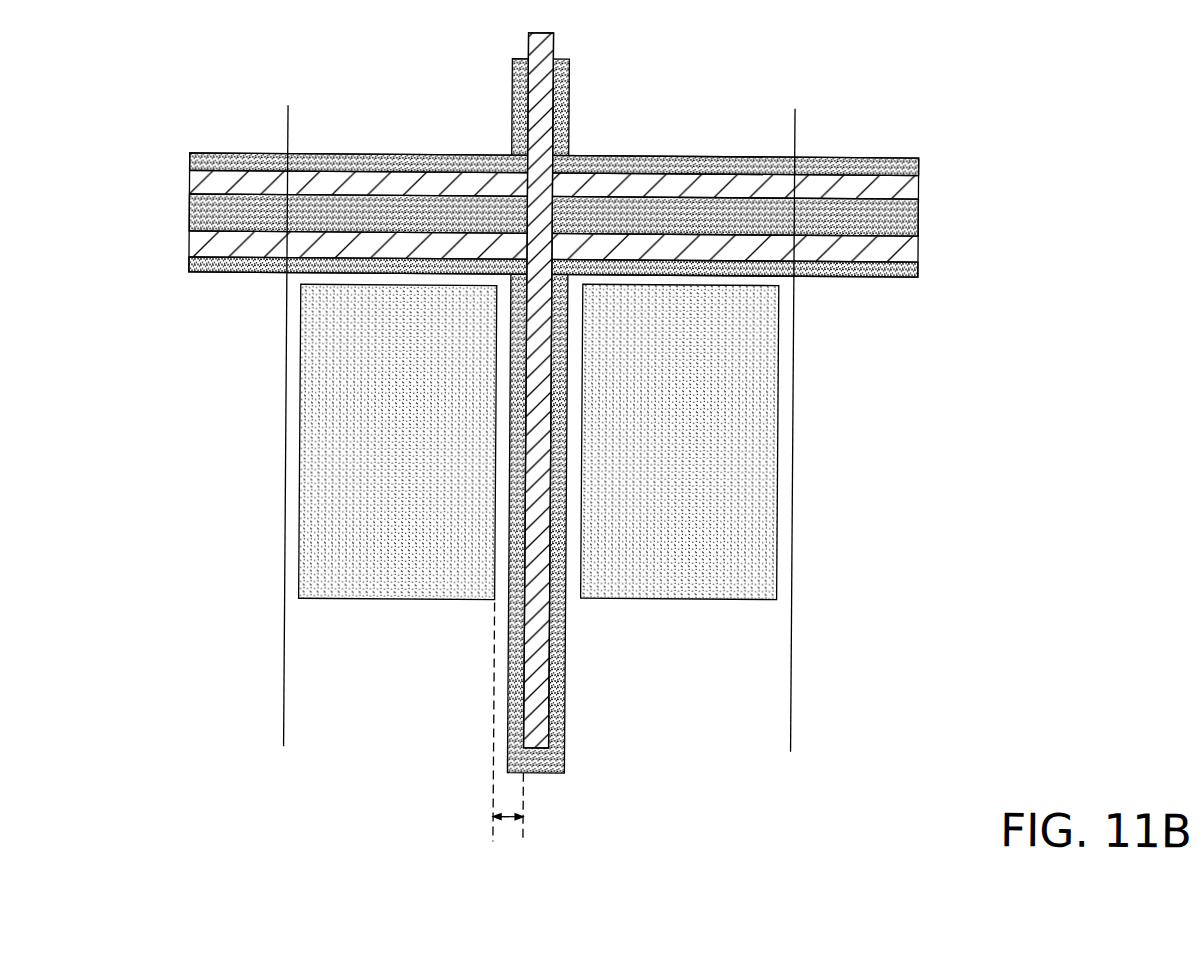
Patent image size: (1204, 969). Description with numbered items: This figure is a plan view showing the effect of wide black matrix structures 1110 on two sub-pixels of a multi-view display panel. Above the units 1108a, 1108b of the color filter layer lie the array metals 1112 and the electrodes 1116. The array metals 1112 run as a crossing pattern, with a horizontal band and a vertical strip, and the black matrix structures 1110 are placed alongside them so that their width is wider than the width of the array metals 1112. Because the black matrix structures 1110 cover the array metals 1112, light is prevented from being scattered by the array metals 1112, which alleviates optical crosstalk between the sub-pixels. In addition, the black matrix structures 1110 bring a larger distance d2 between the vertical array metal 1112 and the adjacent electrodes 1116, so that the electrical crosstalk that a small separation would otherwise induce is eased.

The unit of the color filter layer 1108a is at (676, 112).
The unit of the color filter layer 1108b is at (414, 116).
The black matrix structure 1110 is at (518, 97).
The array metal 1112 is at (545, 90).
The electrode 1116 is at (300, 393).
The distance d2 is at (510, 812).